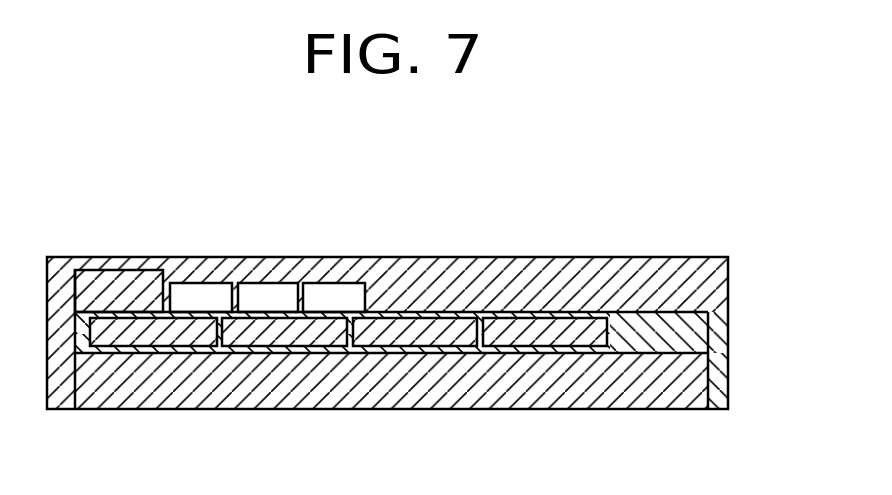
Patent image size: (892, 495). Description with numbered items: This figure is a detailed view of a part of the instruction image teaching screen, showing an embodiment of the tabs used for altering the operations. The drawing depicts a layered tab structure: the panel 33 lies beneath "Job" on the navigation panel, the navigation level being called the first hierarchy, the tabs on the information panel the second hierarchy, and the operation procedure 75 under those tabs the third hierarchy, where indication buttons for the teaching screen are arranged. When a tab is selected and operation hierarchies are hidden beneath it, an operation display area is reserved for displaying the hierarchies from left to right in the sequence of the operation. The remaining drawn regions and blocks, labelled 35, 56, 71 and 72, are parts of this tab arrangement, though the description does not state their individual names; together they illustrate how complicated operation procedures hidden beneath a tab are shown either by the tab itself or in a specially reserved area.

The panel 33 is at (435, 290).
The lower case 35 is at (435, 377).
The insulating resin layer 56 is at (217, 340).
The heat dissipation block 71 is at (109, 296).
The electronic components 72 is at (205, 296).
The operation procedure 75 is at (143, 333).